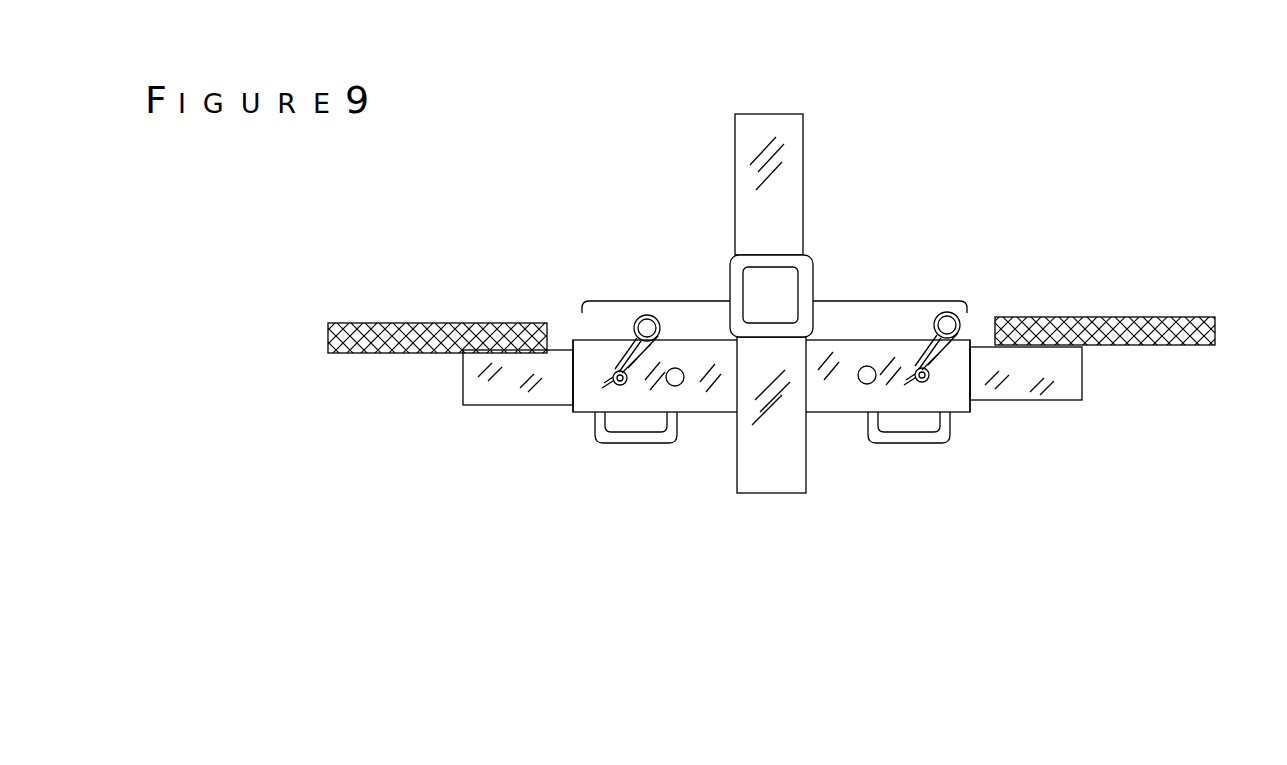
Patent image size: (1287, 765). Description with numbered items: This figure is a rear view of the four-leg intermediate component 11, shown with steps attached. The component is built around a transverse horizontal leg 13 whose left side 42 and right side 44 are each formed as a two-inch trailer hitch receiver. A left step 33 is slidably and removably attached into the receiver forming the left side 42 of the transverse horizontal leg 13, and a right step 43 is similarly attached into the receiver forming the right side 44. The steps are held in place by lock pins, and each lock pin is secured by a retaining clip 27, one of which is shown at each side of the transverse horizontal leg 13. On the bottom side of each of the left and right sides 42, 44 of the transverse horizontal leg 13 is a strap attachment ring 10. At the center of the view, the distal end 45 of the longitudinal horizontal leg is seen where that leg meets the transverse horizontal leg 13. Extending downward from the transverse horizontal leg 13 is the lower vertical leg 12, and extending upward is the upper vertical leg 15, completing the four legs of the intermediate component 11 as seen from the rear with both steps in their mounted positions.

The strap attachment ring 10 is at (637, 440).
The four-leg intermediate component 11 is at (804, 348).
The lower vertical leg 12 is at (773, 477).
The transverse horizontal leg 13 is at (841, 301).
The upper vertical leg 15 is at (743, 139).
The retaining clip 27 is at (636, 326).
The left step 33 is at (370, 323).
The left side of the transverse horizontal leg 42 is at (587, 354).
The right step 43 is at (1115, 317).
The right side of the transverse horizontal leg 44 is at (957, 393).
The distal end of the longitudinal horizontal leg 45 is at (737, 293).